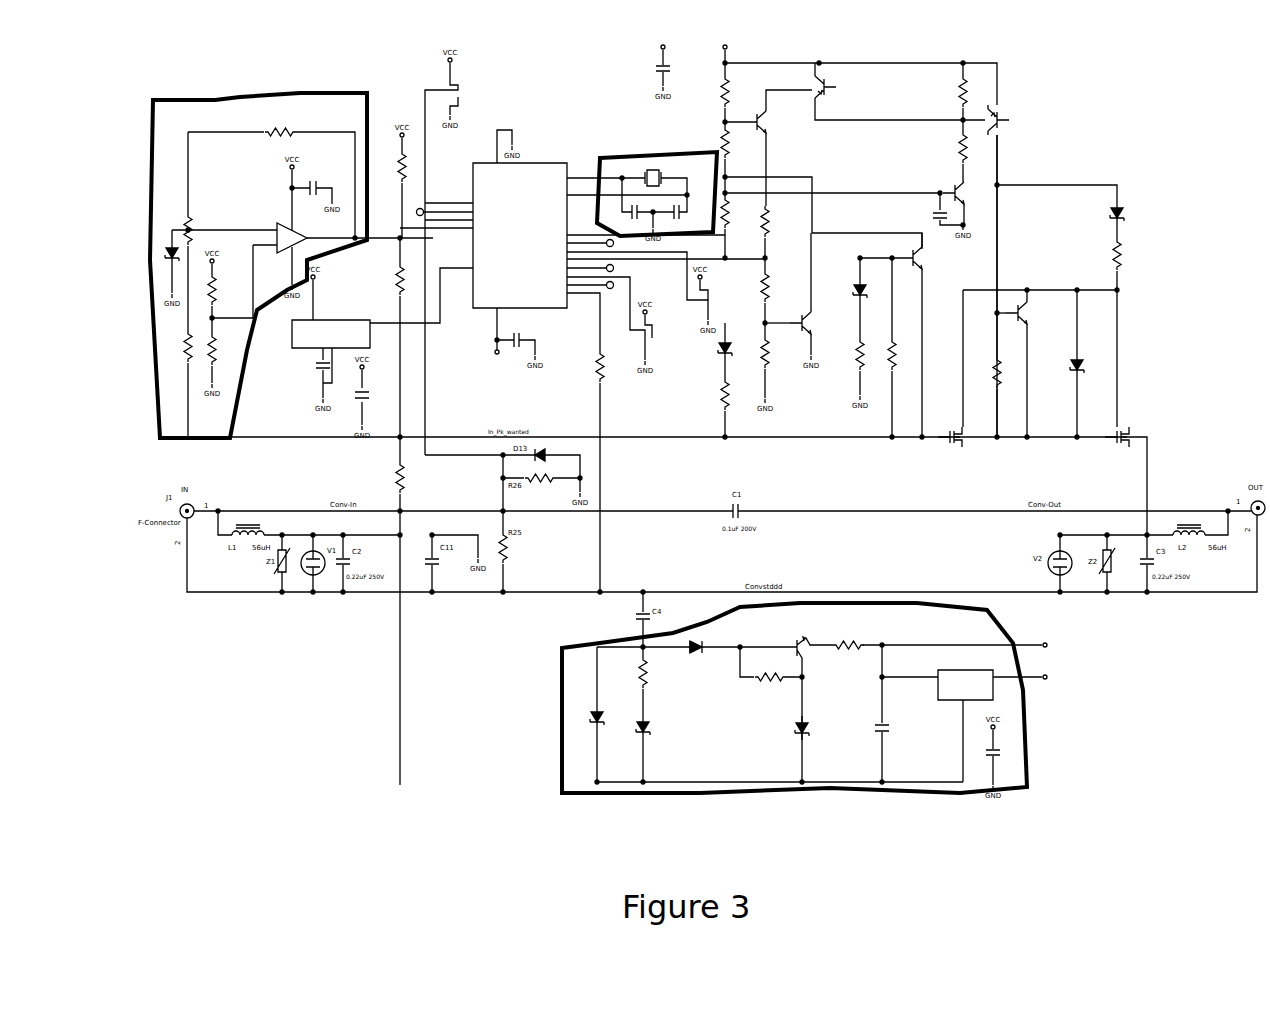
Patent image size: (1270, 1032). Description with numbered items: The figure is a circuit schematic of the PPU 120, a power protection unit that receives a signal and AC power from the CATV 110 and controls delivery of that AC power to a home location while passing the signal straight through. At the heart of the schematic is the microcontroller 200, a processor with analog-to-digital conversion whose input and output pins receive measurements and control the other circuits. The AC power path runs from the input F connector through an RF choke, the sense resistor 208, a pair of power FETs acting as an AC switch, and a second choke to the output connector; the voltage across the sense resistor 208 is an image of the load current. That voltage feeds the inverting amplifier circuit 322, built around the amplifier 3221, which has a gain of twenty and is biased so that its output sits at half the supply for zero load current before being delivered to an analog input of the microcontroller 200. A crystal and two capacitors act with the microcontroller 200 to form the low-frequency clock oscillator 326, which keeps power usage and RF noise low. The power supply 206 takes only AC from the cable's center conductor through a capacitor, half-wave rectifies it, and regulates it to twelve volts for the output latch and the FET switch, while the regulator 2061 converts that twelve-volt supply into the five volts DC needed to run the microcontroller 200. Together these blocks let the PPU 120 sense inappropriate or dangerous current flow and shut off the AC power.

The PPU 120 is at (1196, 136).
The microcontroller 200 is at (528, 162).
The power supply 206 is at (562, 672).
The regulator 2061 is at (994, 690).
The sense resistor 208 is at (394, 470).
The inverting amplifier circuit 322 is at (216, 100).
The amplifier 3221 is at (278, 226).
The clock oscillator 326 is at (633, 155).
The CATV 110 is at (303, 349).